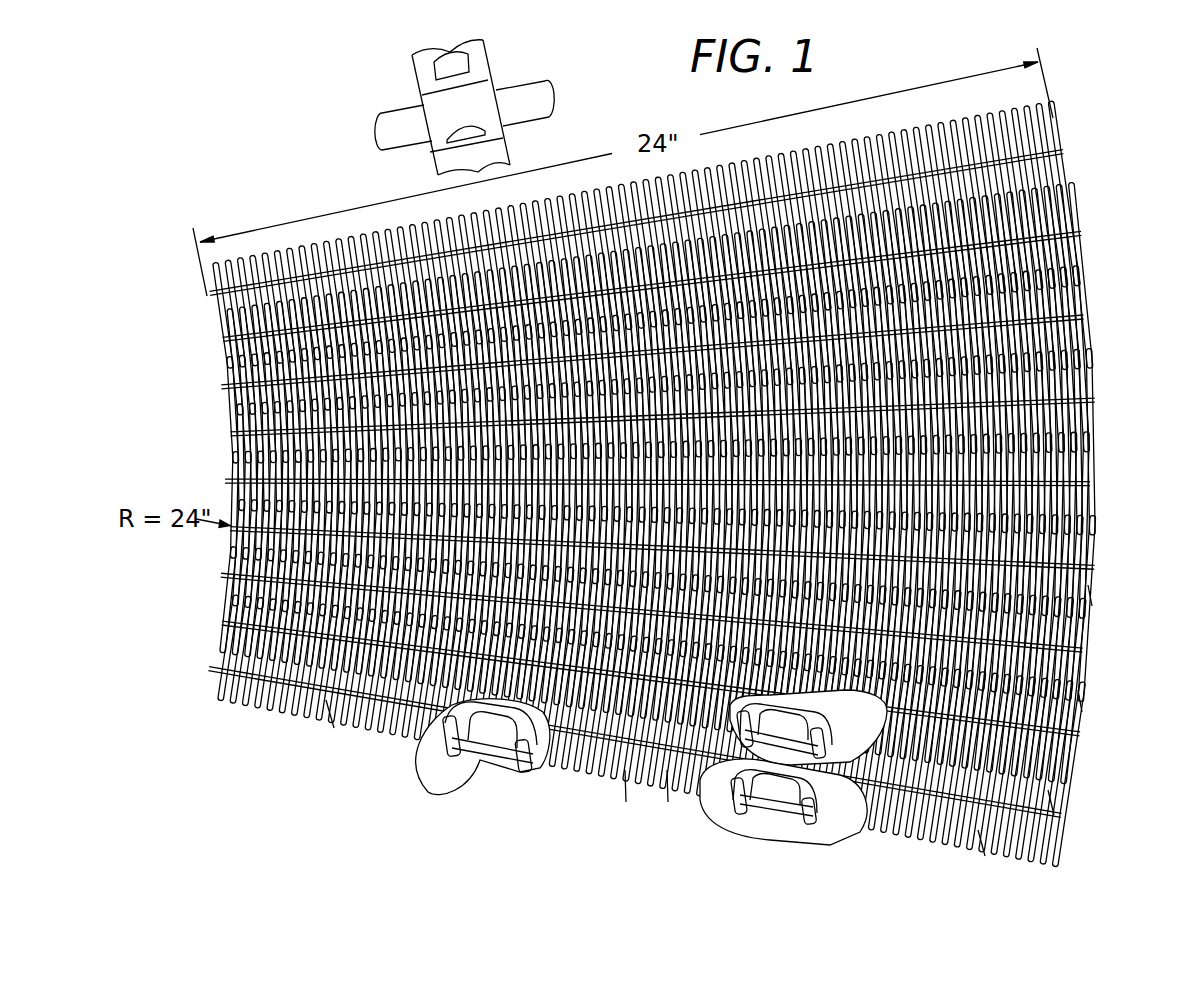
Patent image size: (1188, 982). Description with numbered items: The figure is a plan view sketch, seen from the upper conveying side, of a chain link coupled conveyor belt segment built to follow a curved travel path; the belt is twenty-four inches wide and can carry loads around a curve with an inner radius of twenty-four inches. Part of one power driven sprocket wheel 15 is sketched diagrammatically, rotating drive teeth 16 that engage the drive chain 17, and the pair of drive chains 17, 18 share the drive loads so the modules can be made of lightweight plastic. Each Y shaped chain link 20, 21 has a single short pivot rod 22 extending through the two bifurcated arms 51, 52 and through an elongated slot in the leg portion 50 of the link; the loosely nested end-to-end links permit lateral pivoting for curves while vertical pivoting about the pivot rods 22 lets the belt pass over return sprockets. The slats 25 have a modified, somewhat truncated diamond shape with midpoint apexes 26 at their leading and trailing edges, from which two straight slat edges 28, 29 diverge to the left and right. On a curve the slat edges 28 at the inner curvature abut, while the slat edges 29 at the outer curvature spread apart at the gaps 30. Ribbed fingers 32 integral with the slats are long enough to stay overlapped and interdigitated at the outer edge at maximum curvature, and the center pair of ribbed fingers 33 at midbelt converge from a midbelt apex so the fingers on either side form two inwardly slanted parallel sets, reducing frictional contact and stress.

The sprocket wheel 15 is at (488, 160).
The drive teeth 16 is at (438, 57).
The drive chain 17 is at (462, 768).
The drive chain 18 is at (742, 818).
The Y shaped chain link 20 is at (443, 742).
The Y shaped chain link 21 is at (816, 826).
The pivot rod 22 is at (770, 818).
The slat 25 is at (1053, 814).
The midpoint apex 26 is at (668, 800).
The slat edge 28 is at (332, 724).
The slat edge 29 is at (984, 855).
The gap 30 is at (1081, 711).
The ribbed finger 32 is at (1094, 606).
The center pair of ribbed fingers 33 is at (628, 800).
The leg portion 50 is at (803, 718).
The bifurcated arm 51 is at (801, 797).
The bifurcated arm 52 is at (735, 790).